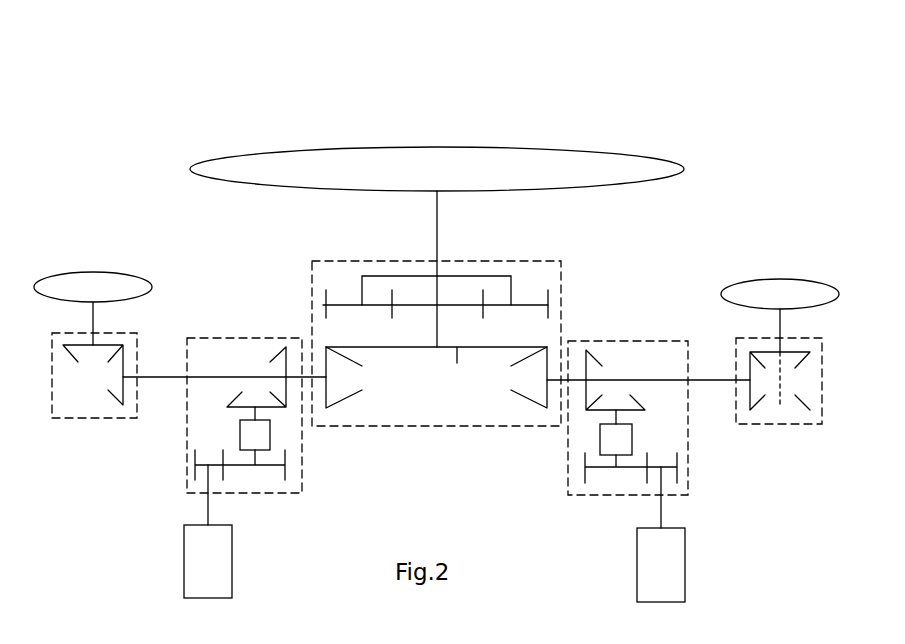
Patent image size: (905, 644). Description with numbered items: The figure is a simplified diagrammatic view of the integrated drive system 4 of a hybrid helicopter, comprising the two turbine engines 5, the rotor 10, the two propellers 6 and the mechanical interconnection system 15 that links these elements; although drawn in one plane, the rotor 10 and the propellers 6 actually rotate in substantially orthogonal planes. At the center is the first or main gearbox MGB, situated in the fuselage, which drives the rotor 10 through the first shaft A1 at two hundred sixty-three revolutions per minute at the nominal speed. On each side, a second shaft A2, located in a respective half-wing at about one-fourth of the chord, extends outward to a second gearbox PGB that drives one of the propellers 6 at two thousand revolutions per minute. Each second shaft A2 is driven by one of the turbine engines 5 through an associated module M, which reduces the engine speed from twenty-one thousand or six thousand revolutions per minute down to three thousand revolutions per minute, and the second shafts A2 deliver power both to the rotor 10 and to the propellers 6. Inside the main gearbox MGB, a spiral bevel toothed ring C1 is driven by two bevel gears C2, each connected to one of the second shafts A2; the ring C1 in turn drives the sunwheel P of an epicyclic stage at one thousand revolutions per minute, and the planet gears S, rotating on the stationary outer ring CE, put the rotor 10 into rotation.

The integrated drive system 4 is at (186, 132).
The mechanical interconnection system 15 is at (436, 330).
The rotor 10 is at (623, 150).
The propellers 6 is at (92, 272).
The turbine engines 5 is at (184, 578).
The first shaft A1 is at (438, 222).
The second shafts A2 is at (148, 376).
The main gearbox MGB is at (526, 260).
The second gearboxes PGB is at (88, 420).
The modules M is at (272, 494).
The stationary outer ring CE is at (322, 298).
The planet gears S is at (349, 301).
The sunwheel P is at (408, 303).
The spiral bevel toothed ring C1 is at (457, 363).
The bevel gears C2 is at (353, 395).